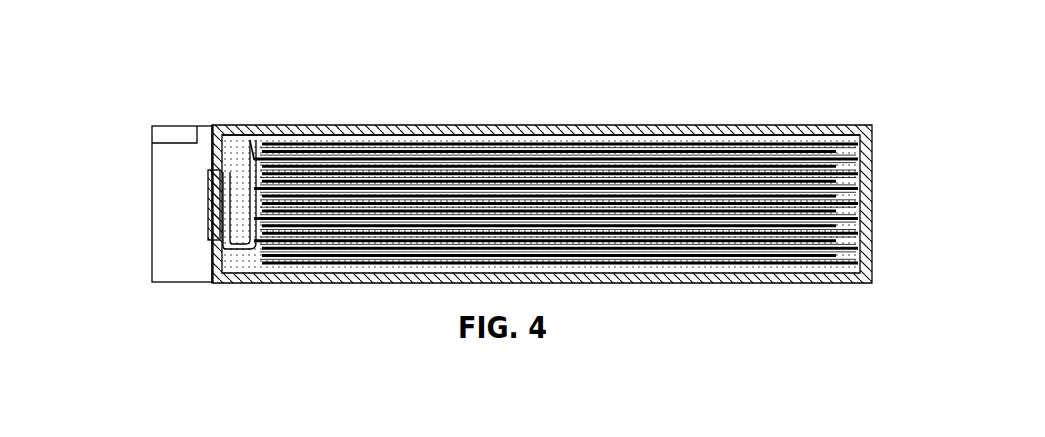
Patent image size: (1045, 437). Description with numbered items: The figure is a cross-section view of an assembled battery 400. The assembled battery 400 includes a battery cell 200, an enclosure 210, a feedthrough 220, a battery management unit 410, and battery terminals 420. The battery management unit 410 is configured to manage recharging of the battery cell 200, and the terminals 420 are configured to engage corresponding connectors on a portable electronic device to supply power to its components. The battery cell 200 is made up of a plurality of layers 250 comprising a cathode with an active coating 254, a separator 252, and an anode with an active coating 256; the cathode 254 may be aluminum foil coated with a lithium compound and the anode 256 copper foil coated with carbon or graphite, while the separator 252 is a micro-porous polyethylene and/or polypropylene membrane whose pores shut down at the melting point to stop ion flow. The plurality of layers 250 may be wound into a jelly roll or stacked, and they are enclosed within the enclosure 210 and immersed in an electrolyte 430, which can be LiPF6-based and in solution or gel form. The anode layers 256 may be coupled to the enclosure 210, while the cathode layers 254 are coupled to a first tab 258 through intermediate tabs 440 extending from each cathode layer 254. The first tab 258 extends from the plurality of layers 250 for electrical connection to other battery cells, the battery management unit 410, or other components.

The assembled battery 400 is at (65, 41).
The battery cell 200 is at (507, 160).
The enclosure 210 is at (577, 127).
The electrolyte 430 is at (485, 128).
The separator 252 is at (380, 145).
The plurality of layers 250 is at (600, 195).
The anode with active coating 256 is at (862, 152).
The cathode with active coating 254 is at (597, 290).
The feedthrough 220 is at (208, 197).
The intermediate tabs 440 is at (226, 160).
The battery terminals 420 is at (170, 135).
The battery management unit 410 is at (152, 215).
The first tab 258 is at (220, 240).